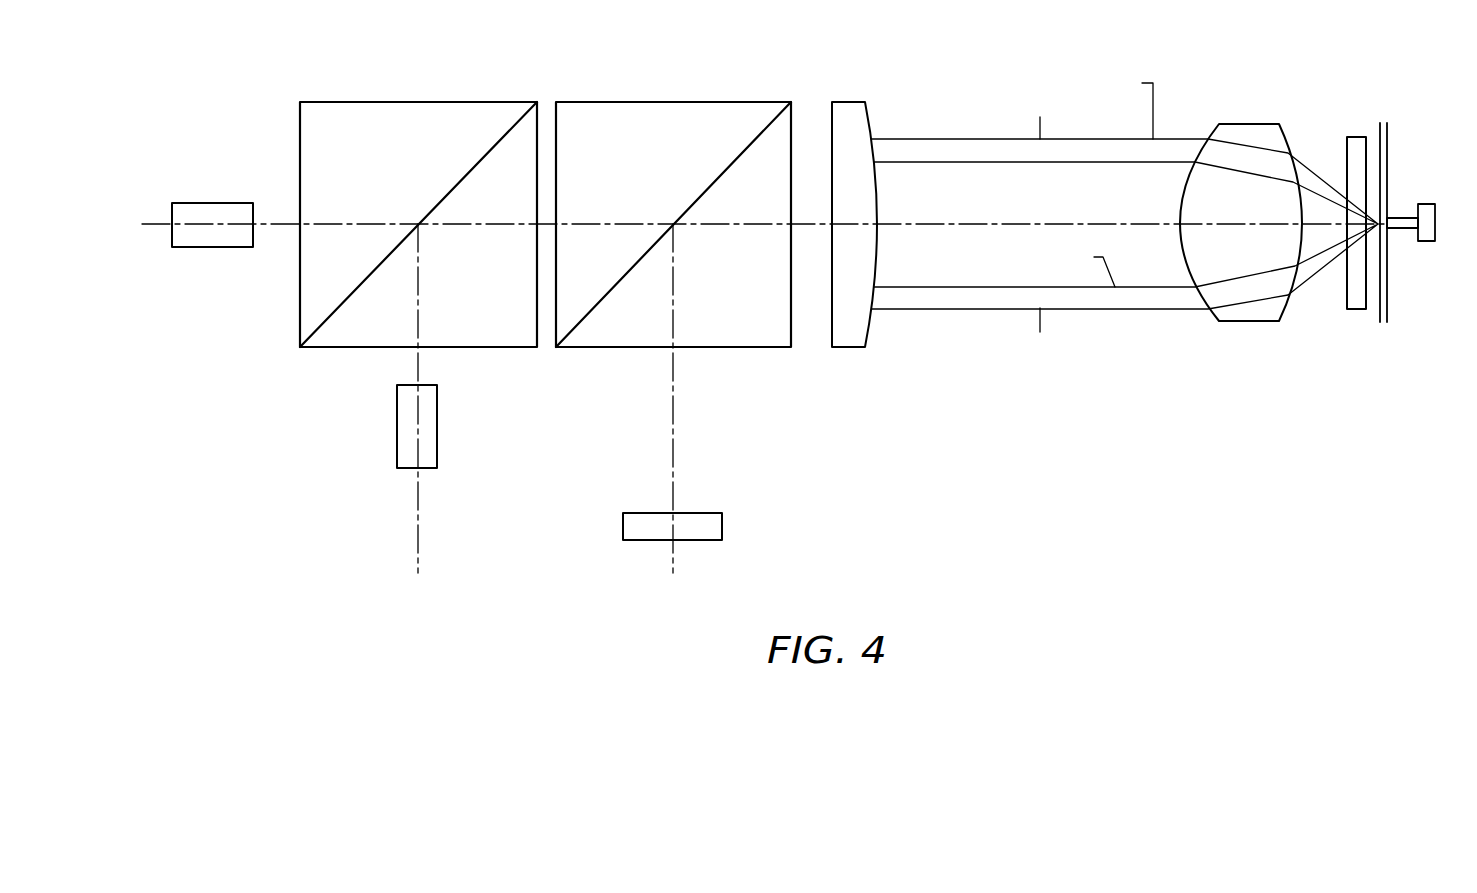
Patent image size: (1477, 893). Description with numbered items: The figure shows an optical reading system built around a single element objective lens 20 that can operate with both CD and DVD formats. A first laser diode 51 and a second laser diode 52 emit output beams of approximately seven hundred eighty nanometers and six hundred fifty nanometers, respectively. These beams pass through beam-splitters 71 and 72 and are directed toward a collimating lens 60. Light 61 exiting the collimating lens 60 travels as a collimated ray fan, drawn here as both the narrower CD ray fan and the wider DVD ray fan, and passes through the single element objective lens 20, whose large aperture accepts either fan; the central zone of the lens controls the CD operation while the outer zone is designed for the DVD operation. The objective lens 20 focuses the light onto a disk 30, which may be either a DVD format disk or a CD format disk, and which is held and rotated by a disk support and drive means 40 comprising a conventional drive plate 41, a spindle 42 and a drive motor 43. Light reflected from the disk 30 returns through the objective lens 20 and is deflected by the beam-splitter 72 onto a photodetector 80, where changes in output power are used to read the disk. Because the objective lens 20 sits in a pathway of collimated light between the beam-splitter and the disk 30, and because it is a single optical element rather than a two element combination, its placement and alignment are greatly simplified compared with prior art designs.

The single element objective lens 20 is at (1239, 113).
The disk 30 is at (1347, 124).
The disk support and drive means 40 is at (1387, 110).
The drive plate 41 is at (1387, 315).
The spindle 42 is at (1405, 216).
The drive motor 43 is at (1428, 203).
The first laser diode 51 is at (196, 247).
The second laser diode 52 is at (437, 428).
The collimating lens 60 is at (861, 92).
The light 61 is at (935, 138).
The beam-splitter 71 is at (453, 102).
The beam-splitter 72 is at (699, 102).
The photodetector 80 is at (708, 513).